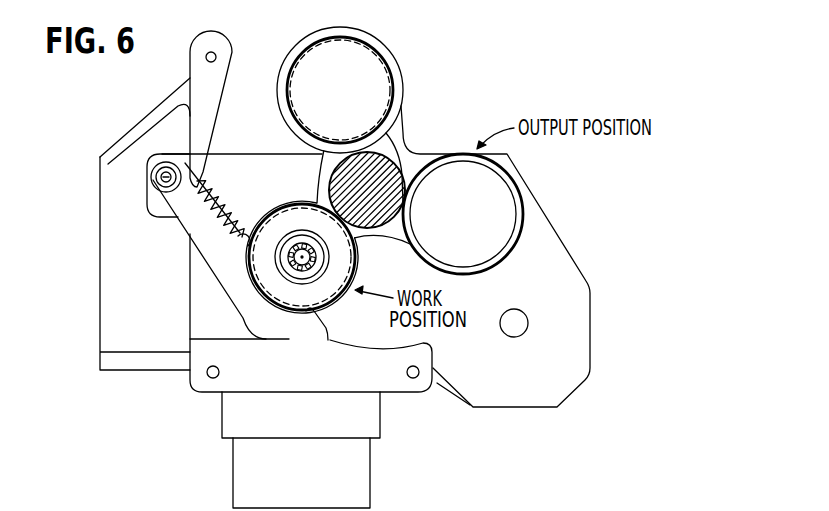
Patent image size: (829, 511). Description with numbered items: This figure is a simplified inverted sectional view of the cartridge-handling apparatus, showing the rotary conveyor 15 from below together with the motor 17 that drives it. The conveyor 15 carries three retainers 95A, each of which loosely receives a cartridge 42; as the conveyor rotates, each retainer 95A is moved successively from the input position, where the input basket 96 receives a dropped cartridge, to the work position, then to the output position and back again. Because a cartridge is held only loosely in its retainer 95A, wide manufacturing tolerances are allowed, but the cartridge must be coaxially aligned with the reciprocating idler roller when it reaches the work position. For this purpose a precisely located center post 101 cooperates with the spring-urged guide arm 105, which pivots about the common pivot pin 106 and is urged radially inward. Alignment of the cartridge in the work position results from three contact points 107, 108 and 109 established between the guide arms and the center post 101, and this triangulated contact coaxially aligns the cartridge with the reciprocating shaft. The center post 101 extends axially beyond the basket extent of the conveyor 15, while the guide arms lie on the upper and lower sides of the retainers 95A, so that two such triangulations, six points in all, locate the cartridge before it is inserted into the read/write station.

The rotary conveyor 15 is at (405, 133).
The motor 17 is at (372, 463).
The cartridge 42 is at (368, 47).
The retainer 95A is at (303, 47).
The input basket 96 is at (394, 50).
The center post 101 is at (340, 182).
The guide arm 105 is at (215, 282).
The pivot pin 106 is at (160, 178).
The contact point 107 is at (242, 230).
The contact point 108 is at (306, 312).
The contact point 109 is at (338, 220).